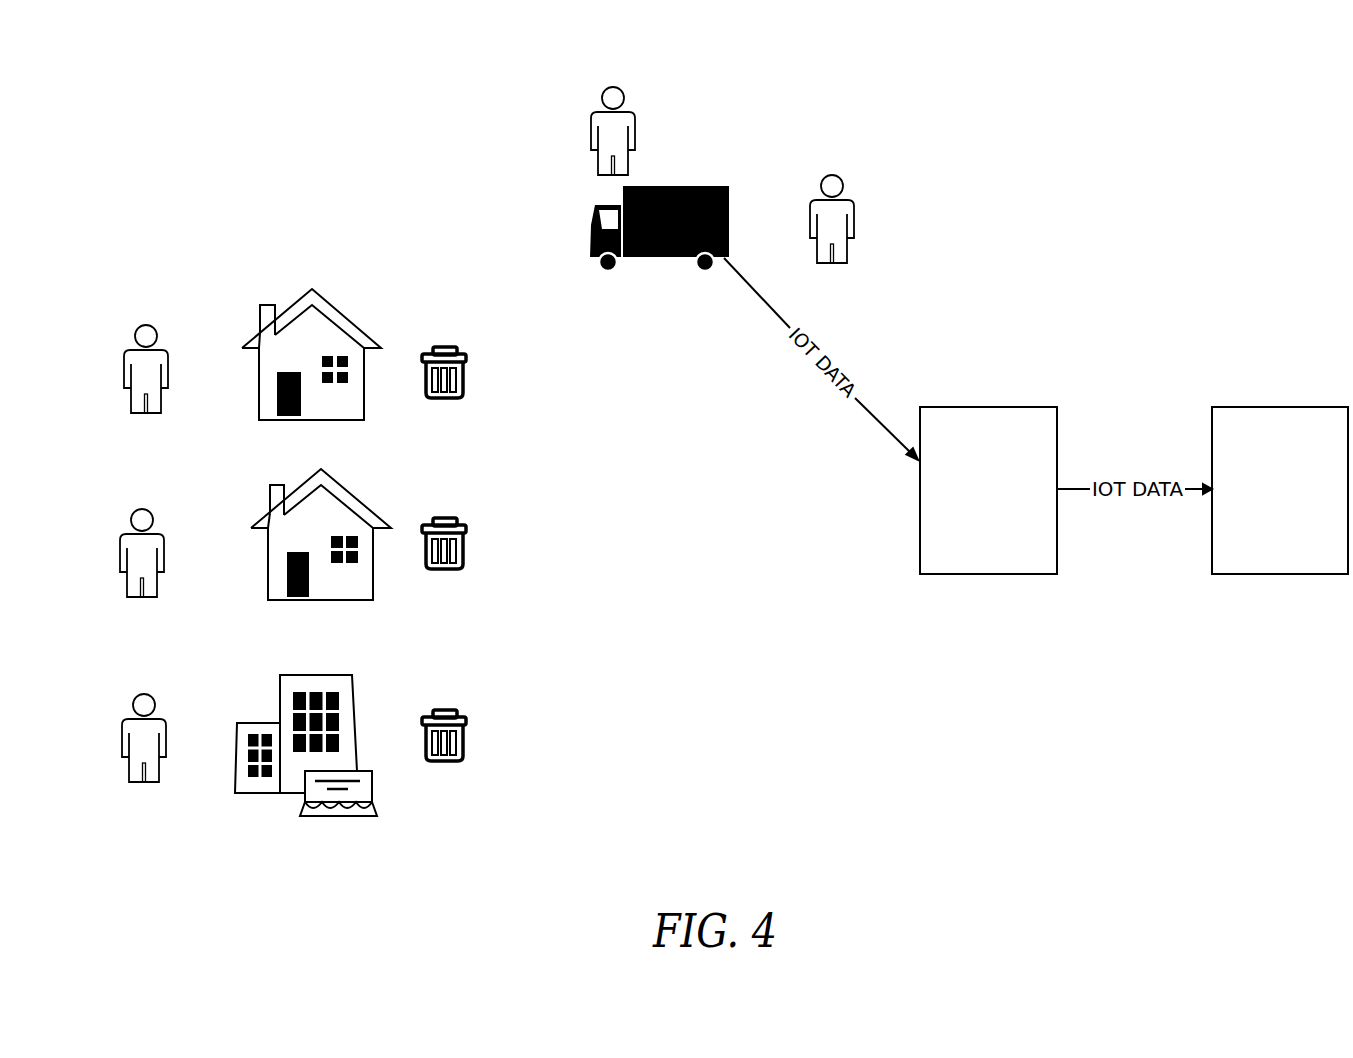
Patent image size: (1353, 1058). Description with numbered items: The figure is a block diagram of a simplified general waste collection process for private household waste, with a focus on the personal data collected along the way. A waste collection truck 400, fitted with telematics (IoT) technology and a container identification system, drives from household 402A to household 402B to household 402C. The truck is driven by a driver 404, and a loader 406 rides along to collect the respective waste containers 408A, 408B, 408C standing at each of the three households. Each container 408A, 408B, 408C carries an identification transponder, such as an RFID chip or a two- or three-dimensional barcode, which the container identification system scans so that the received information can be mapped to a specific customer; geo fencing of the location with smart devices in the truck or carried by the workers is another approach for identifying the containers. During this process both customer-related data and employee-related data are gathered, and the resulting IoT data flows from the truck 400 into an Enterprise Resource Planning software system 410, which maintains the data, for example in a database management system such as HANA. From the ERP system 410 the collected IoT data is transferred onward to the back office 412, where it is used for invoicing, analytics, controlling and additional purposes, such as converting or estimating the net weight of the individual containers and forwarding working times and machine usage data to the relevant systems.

The waste collection truck 400 is at (669, 190).
The household 402A is at (322, 326).
The household 402B is at (337, 512).
The household 402C is at (323, 716).
The driver 404 is at (640, 112).
The loader 406 is at (859, 197).
The waste container 408A is at (474, 348).
The waste container 408B is at (474, 520).
The waste container 408C is at (474, 714).
The Enterprise Resource Planning (ERP) software system 410 is at (988, 490).
The back office 412 is at (1280, 490).